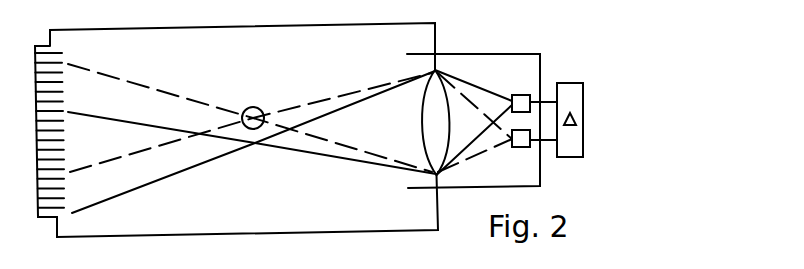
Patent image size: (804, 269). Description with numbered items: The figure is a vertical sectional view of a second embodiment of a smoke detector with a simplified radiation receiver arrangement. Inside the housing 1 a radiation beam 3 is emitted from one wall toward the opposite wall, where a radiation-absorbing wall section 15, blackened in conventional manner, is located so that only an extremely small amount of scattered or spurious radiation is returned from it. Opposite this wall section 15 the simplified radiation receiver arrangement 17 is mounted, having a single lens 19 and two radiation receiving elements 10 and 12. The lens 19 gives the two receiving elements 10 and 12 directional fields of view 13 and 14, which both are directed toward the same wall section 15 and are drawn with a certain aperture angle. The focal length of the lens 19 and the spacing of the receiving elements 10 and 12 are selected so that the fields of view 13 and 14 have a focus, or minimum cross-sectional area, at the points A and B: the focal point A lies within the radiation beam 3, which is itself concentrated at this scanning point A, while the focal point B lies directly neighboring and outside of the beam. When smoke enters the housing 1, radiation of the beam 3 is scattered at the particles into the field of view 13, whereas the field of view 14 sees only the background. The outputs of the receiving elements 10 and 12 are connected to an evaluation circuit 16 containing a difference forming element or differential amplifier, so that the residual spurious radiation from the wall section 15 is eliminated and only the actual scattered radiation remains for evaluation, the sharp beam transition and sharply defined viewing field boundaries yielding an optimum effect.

The housing 1 is at (187, 236).
The radiation beam 3 is at (246, 108).
The radiation receiving element 10 is at (529, 98).
The radiation receiving element 12 is at (529, 147).
The field of view 13 is at (170, 113).
The field of view 14 is at (213, 151).
The radiation-absorbing wall section 15 is at (55, 81).
The evaluation circuit 16 is at (580, 110).
The radiation receiver arrangement 17 is at (505, 53).
The lens 19 is at (428, 118).
The focal point A is at (261, 111).
The focal point B is at (256, 145).